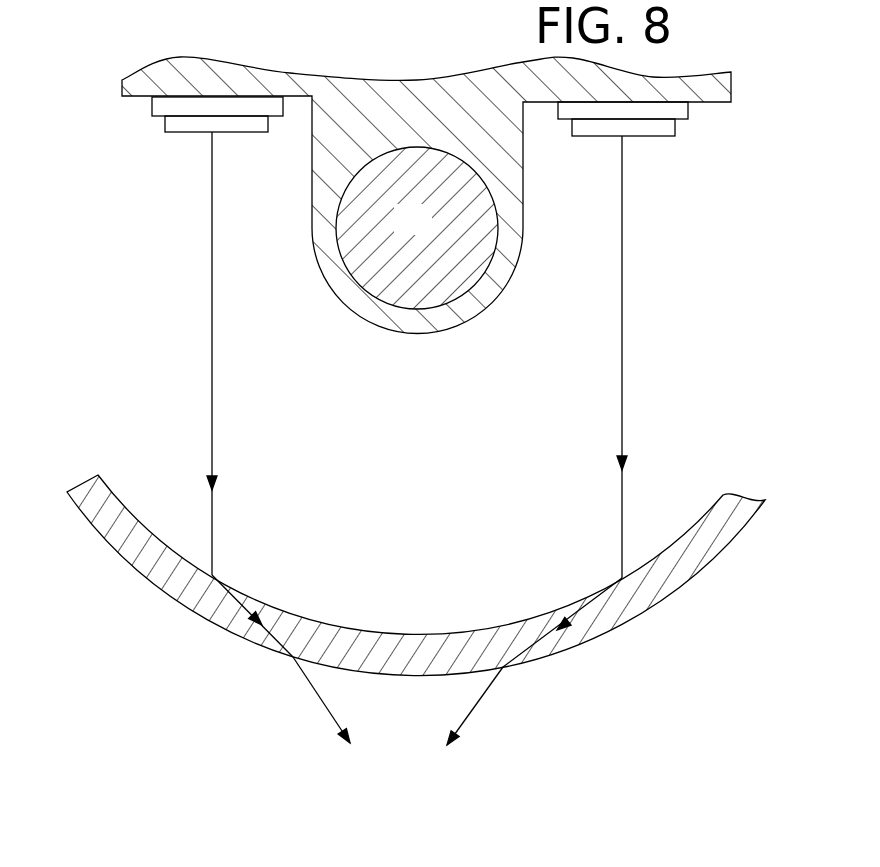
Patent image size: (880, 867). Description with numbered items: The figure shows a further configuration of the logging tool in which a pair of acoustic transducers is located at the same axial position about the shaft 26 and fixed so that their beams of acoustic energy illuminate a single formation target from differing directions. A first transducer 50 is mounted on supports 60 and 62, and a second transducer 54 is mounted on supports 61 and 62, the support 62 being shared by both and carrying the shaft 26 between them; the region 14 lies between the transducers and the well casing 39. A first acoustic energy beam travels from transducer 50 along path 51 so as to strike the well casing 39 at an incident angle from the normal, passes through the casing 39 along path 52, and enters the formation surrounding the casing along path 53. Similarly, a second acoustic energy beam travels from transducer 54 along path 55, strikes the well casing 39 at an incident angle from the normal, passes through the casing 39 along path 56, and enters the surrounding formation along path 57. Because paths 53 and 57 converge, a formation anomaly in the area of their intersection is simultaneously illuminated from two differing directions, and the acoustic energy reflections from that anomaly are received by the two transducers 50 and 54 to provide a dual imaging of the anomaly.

The support 62 is at (288, 74).
The shaft 26 is at (428, 232).
The gap 14 is at (413, 431).
The support 60 is at (150, 103).
The transducer 50 is at (190, 134).
The support 61 is at (690, 117).
The transducer 54 is at (655, 138).
The well casing 39 is at (657, 602).
The path 51 is at (212, 357).
The path 52 is at (277, 637).
The path 53 is at (318, 697).
The path 55 is at (622, 352).
The path 56 is at (540, 643).
The path 57 is at (478, 708).